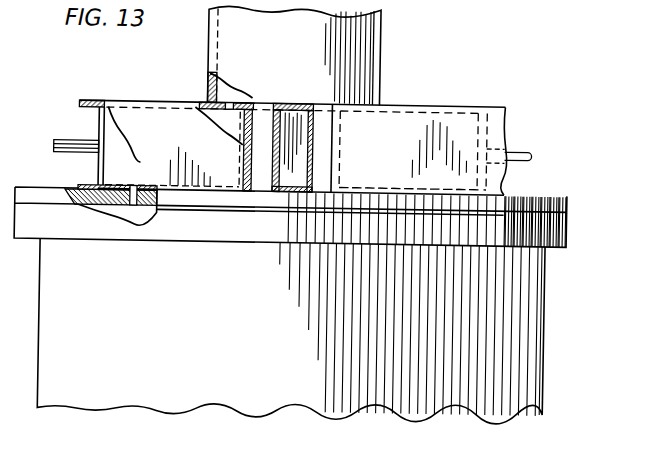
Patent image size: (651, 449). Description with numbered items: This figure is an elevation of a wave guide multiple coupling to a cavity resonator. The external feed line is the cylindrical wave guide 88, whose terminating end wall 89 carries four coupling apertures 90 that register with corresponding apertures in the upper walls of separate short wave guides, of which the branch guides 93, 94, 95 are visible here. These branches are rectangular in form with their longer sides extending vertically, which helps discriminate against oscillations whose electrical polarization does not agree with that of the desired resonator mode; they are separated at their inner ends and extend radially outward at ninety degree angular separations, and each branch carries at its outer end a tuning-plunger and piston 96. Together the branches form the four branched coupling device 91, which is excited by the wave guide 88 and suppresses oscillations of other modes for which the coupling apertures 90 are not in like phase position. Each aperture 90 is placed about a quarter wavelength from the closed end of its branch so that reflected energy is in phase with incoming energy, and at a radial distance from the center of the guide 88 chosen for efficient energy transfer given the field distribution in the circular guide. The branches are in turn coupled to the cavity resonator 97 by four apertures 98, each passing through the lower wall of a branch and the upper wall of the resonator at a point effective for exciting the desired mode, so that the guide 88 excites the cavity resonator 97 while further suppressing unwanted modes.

The cylindrical wave guide 88 is at (360, 36).
The terminating end wall 89 is at (244, 96).
The coupling apertures 90 is at (224, 93).
The four branched coupling device 91 is at (236, 133).
The short wave guide 93 is at (459, 100).
The short wave guide 94 is at (312, 140).
The short wave guide 95 is at (140, 98).
The tuning-plunger and piston 96 is at (99, 116).
The cavity resonator 97 is at (539, 309).
The apertures 98 is at (133, 185).